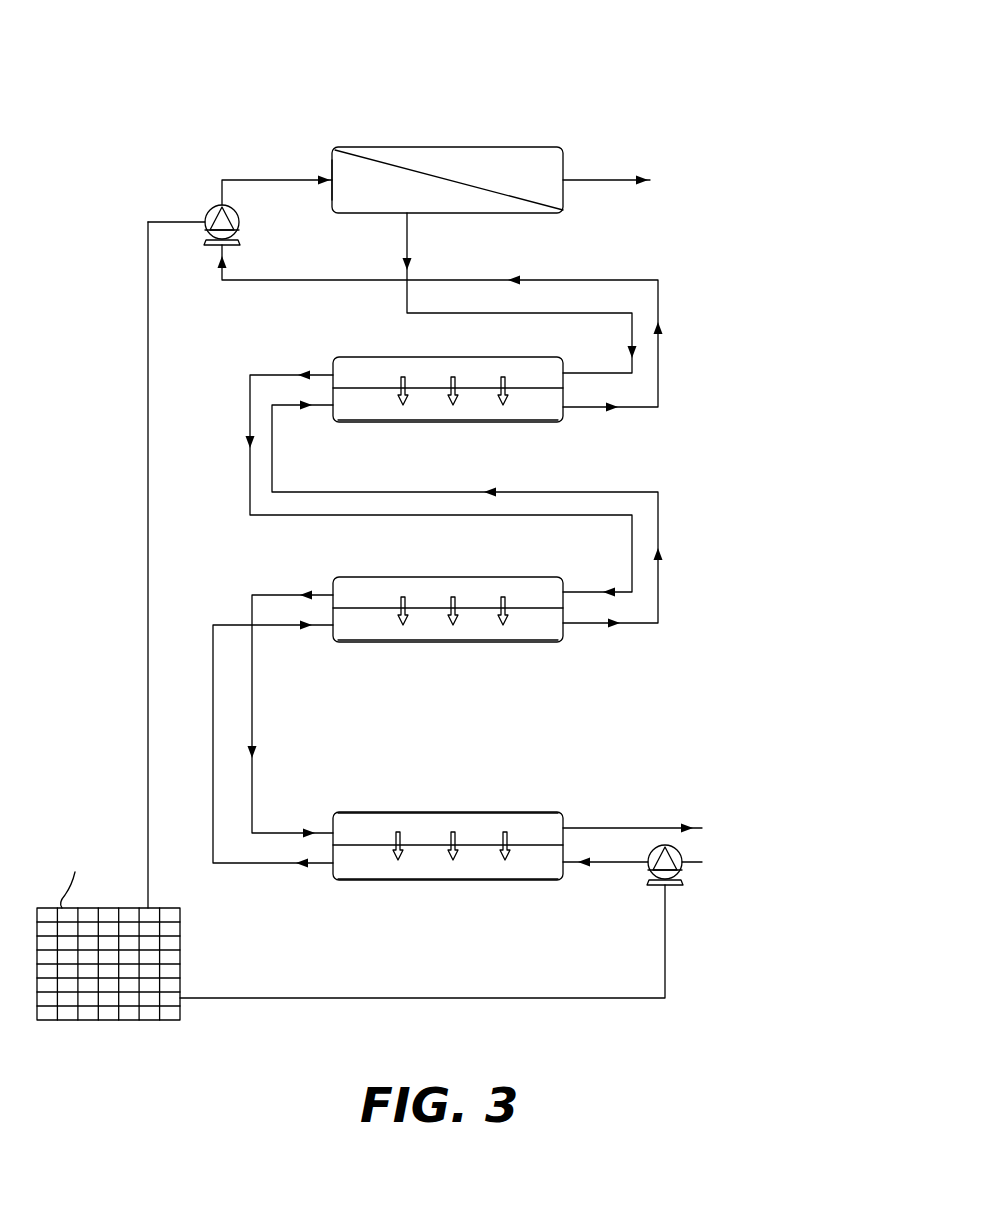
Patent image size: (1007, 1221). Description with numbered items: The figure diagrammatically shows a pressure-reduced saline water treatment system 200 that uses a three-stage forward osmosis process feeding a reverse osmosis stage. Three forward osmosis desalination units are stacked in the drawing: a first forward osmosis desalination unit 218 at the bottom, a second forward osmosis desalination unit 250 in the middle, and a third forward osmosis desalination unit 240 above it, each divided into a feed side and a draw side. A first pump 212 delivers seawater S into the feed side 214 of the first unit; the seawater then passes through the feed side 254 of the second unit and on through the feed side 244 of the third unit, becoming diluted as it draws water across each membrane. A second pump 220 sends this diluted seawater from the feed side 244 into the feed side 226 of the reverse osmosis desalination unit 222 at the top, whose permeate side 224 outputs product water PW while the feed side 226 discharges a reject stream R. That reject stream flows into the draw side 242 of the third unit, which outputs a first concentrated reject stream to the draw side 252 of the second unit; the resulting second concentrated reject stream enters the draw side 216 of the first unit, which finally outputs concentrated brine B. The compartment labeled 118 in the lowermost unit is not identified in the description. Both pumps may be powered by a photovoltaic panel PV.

The pressure-reduced saline water treatment system 200 is at (125, 66).
The reverse osmosis desalination unit 222 is at (410, 154).
The permeate side 224 is at (505, 150).
The feed side 226 is at (348, 190).
The second pump 220 is at (207, 212).
The third forward osmosis desalination unit 240 is at (472, 398).
The draw side 242 is at (362, 373).
The feed side 244 is at (352, 412).
The second forward osmosis desalination unit 250 is at (491, 617).
The draw side 252 is at (490, 568).
The feed side 254 is at (524, 634).
The feed side 214 is at (498, 849).
The draw side 216 is at (490, 808).
The first forward osmosis desalination unit 218 is at (560, 812).
The feed side 118 is at (358, 881).
The first pump 212 is at (676, 885).